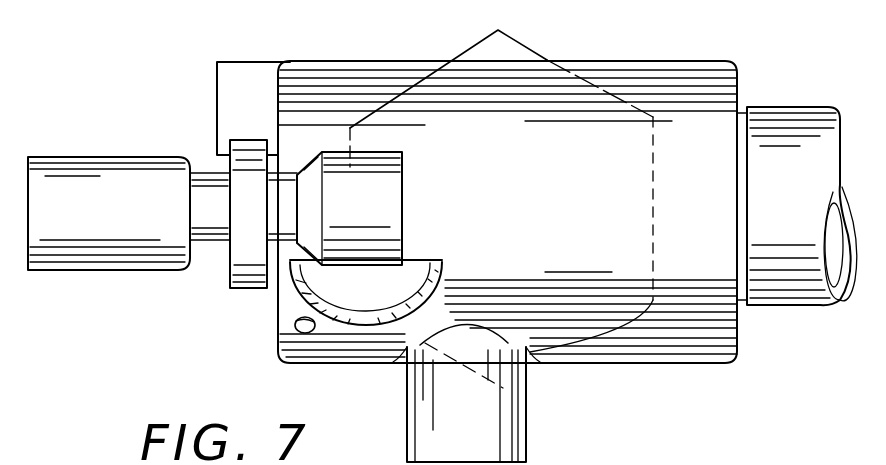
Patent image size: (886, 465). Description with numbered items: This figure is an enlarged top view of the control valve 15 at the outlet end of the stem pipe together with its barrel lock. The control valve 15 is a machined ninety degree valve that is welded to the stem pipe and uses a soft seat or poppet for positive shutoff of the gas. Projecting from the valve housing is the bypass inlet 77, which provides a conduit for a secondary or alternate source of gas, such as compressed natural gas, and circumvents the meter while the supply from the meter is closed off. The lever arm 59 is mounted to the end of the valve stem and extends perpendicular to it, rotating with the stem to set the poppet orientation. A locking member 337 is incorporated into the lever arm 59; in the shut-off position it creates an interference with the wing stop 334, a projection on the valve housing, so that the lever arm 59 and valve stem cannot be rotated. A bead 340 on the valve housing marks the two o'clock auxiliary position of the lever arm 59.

The control valve 15 is at (702, 60).
The locking member 337 is at (96, 156).
The lever arm 59 is at (246, 230).
The wing stop 334 is at (418, 258).
The bead 340 is at (276, 332).
The bypass inlet 77 is at (527, 410).